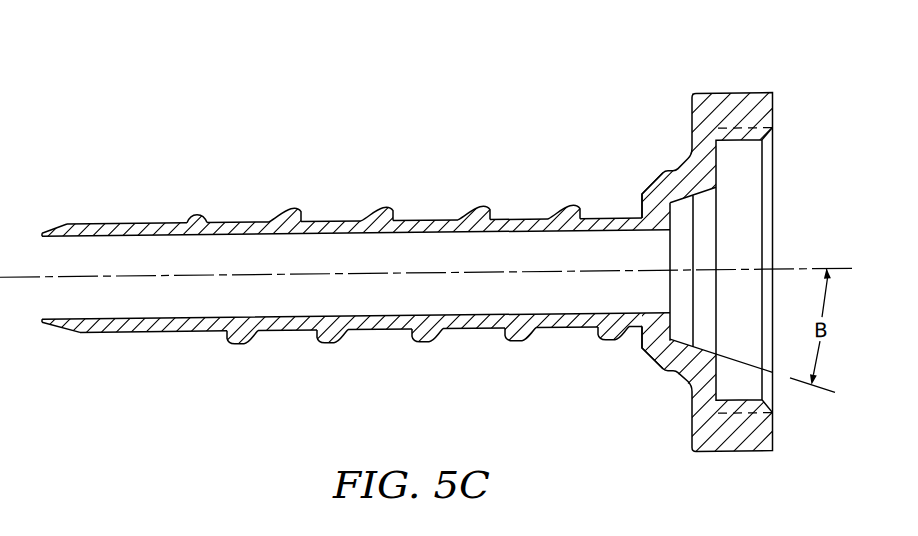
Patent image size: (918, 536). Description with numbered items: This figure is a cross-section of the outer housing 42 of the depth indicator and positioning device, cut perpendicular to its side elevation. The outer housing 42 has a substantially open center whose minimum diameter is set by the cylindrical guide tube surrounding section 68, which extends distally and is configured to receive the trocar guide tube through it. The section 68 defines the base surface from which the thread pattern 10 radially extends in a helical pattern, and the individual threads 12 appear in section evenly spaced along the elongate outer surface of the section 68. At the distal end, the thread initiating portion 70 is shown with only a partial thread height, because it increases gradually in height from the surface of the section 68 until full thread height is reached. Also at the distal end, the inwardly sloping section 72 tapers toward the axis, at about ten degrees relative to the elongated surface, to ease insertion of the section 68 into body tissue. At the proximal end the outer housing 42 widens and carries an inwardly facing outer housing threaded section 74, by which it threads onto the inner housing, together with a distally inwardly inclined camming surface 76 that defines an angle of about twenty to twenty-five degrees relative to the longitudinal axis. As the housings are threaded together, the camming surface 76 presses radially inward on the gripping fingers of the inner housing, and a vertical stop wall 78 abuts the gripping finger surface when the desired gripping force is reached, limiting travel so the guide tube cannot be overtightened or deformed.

The thread pattern 10 is at (372, 199).
The threads 12 is at (480, 209).
The outer housing 42 is at (588, 108).
The guide tube surrounding section 68 is at (413, 218).
The thread initiating portion 70 is at (194, 211).
The inwardly sloping section 72 is at (72, 222).
The outer housing threaded section 74 is at (743, 138).
The camming surface 76 is at (695, 345).
The vertical stop wall 78 is at (644, 341).